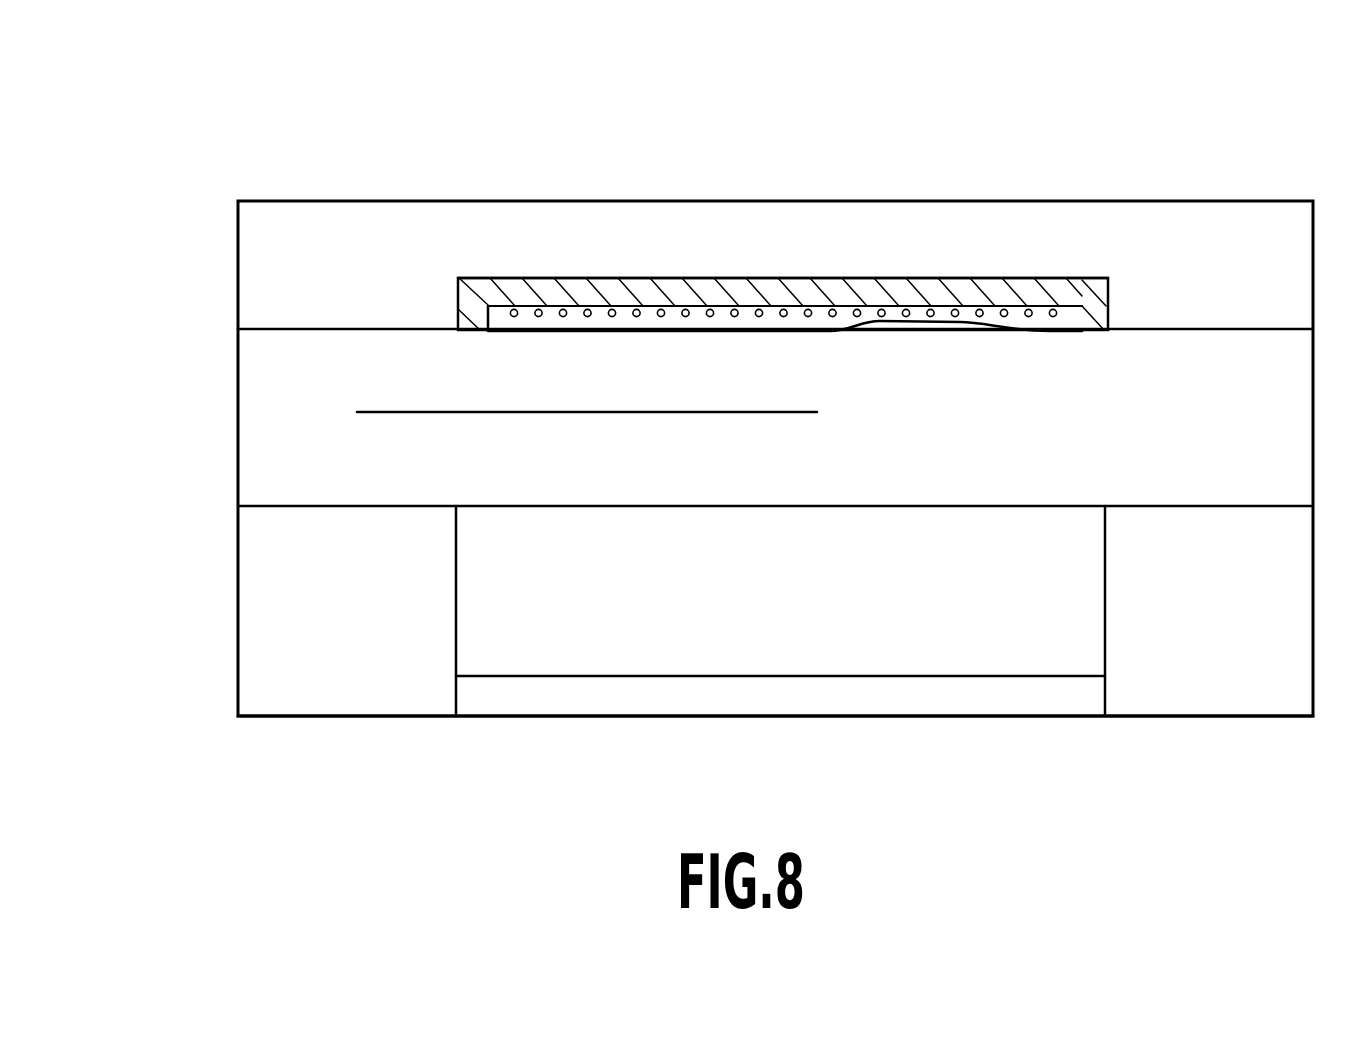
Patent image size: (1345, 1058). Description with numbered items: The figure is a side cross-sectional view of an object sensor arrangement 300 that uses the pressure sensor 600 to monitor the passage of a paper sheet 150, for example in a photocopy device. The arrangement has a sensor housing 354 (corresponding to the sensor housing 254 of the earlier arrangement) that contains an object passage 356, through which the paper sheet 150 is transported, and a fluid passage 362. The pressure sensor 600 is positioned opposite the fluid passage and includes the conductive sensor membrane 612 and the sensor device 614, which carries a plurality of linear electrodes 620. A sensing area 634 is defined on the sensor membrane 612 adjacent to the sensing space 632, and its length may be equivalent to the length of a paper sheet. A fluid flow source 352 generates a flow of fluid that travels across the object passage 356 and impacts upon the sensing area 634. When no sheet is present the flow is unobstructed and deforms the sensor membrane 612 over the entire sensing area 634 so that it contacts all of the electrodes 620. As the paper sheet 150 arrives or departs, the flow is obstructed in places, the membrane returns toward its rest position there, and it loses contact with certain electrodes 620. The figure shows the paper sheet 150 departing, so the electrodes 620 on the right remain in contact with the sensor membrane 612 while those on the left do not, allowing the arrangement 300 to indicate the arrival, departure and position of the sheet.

The object sensor arrangement 300 is at (1157, 90).
The sensor housing 254 is at (238, 263).
The paper sheet 150 is at (365, 411).
The object passage 356 is at (288, 437).
The sensor housing 354 is at (238, 620).
The fluid passage 362 is at (455, 643).
The fluid flow source 352 is at (640, 700).
The pressure sensor 600 is at (1014, 278).
The sensor device 614 is at (477, 278).
The sensor membrane 612 is at (497, 332).
The sensing area 634 is at (535, 332).
The sensing space 632 is at (725, 330).
The electrodes 620 is at (932, 318).